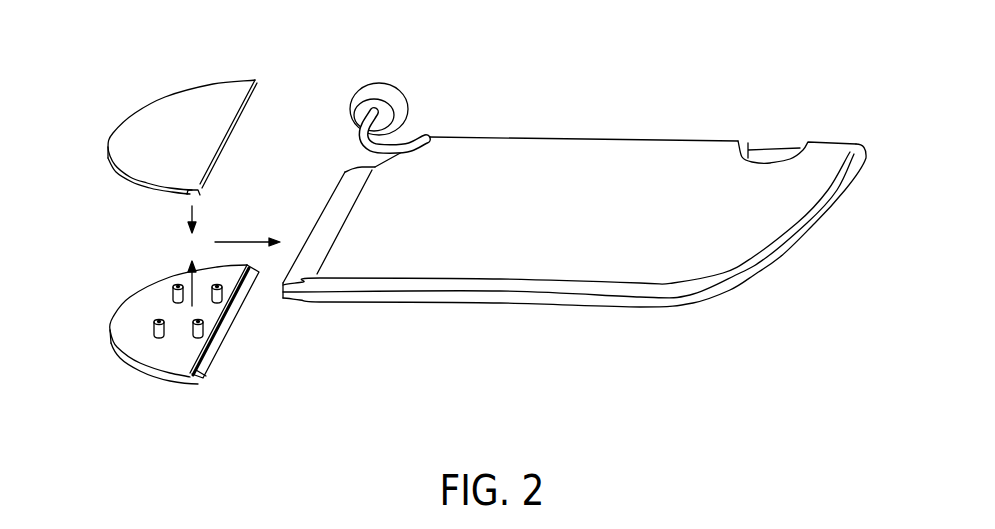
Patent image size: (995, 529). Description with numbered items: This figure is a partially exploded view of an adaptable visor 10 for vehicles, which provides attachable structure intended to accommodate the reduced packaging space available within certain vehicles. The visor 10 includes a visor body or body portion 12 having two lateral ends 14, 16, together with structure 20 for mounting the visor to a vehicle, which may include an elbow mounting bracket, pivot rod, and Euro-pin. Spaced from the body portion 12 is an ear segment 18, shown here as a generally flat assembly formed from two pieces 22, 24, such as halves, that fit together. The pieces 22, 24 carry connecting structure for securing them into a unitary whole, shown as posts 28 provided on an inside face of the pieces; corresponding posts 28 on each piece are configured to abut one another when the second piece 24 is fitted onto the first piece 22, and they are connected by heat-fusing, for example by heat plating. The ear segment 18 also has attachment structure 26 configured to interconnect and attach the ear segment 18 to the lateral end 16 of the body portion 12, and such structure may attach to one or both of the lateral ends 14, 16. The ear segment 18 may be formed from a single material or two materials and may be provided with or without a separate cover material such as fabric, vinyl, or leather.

The adaptable visor 10 is at (574, 216).
The visor body 12 is at (543, 227).
The lateral end 14 is at (793, 300).
The lateral end 16 is at (296, 333).
The ear segment 18 is at (182, 208).
The mounting structure 20 is at (432, 92).
The first piece 22 is at (135, 135).
The second piece 24 is at (162, 352).
The attachment structure 26 is at (199, 194).
The posts 28 is at (153, 329).